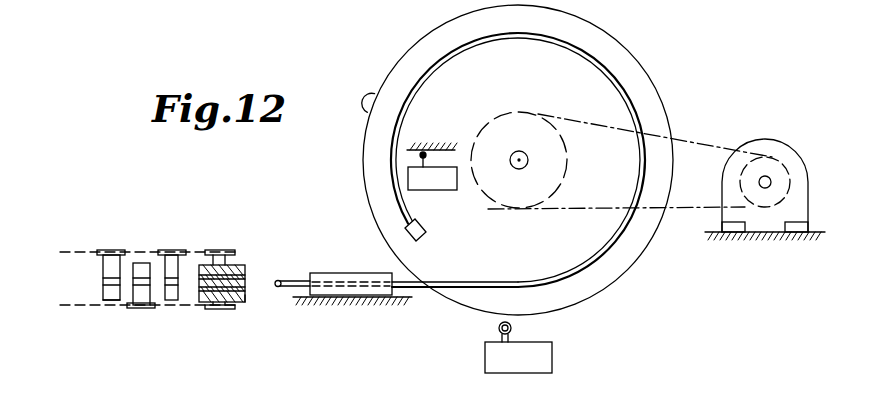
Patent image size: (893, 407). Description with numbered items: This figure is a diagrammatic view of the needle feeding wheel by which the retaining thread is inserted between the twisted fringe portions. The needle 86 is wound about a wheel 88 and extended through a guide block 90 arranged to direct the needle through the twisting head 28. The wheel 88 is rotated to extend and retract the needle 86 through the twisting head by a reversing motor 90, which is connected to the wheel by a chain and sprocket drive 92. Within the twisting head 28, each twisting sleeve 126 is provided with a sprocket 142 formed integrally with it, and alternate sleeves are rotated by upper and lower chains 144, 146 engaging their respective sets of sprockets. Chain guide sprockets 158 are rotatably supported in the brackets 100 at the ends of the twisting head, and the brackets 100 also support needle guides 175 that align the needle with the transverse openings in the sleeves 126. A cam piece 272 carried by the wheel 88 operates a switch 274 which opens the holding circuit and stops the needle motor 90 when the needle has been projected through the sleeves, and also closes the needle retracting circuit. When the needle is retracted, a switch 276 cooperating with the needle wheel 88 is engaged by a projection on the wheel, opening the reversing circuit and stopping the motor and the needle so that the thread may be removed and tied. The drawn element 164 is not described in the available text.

The wheel 88 is at (643, 77).
The needle 86 is at (283, 289).
The cam piece 272 is at (372, 94).
The switch 276 is at (437, 190).
The switch 274 is at (552, 362).
The chain and sprocket drive 92 is at (683, 140).
The reversing motor 90 is at (780, 142).
The upper chain 144 is at (62, 247).
The lower chain 146 is at (60, 307).
The sprocket 142 is at (108, 252).
The link body 164 is at (143, 267).
The twisting sleeve 126 is at (107, 298).
The twisting head 28 is at (228, 228).
The chain guide sprocket 158 is at (232, 252).
The needle guide 175 is at (248, 273).
The bracket 100 is at (245, 303).